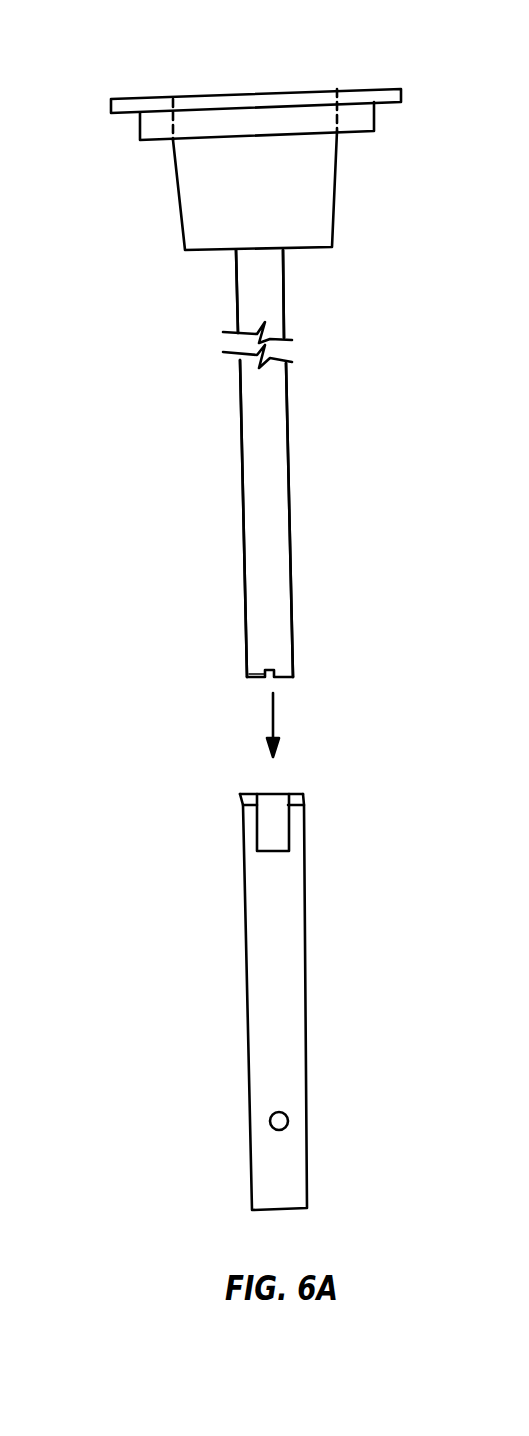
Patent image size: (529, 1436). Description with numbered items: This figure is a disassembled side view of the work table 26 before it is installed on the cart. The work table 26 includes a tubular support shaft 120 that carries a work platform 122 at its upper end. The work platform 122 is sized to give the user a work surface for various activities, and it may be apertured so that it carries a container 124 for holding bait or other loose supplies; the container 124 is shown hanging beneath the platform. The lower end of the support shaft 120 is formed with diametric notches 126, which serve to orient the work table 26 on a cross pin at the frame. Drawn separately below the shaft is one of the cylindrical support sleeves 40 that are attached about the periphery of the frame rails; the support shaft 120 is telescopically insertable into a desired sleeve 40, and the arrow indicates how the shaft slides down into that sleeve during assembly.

The work table 26 is at (302, 455).
The cylindrical support sleeve 40 is at (290, 928).
The tubular support shaft 120 is at (256, 509).
The work platform 122 is at (352, 97).
The container 124 is at (307, 185).
The diametric notches 126 is at (247, 677).